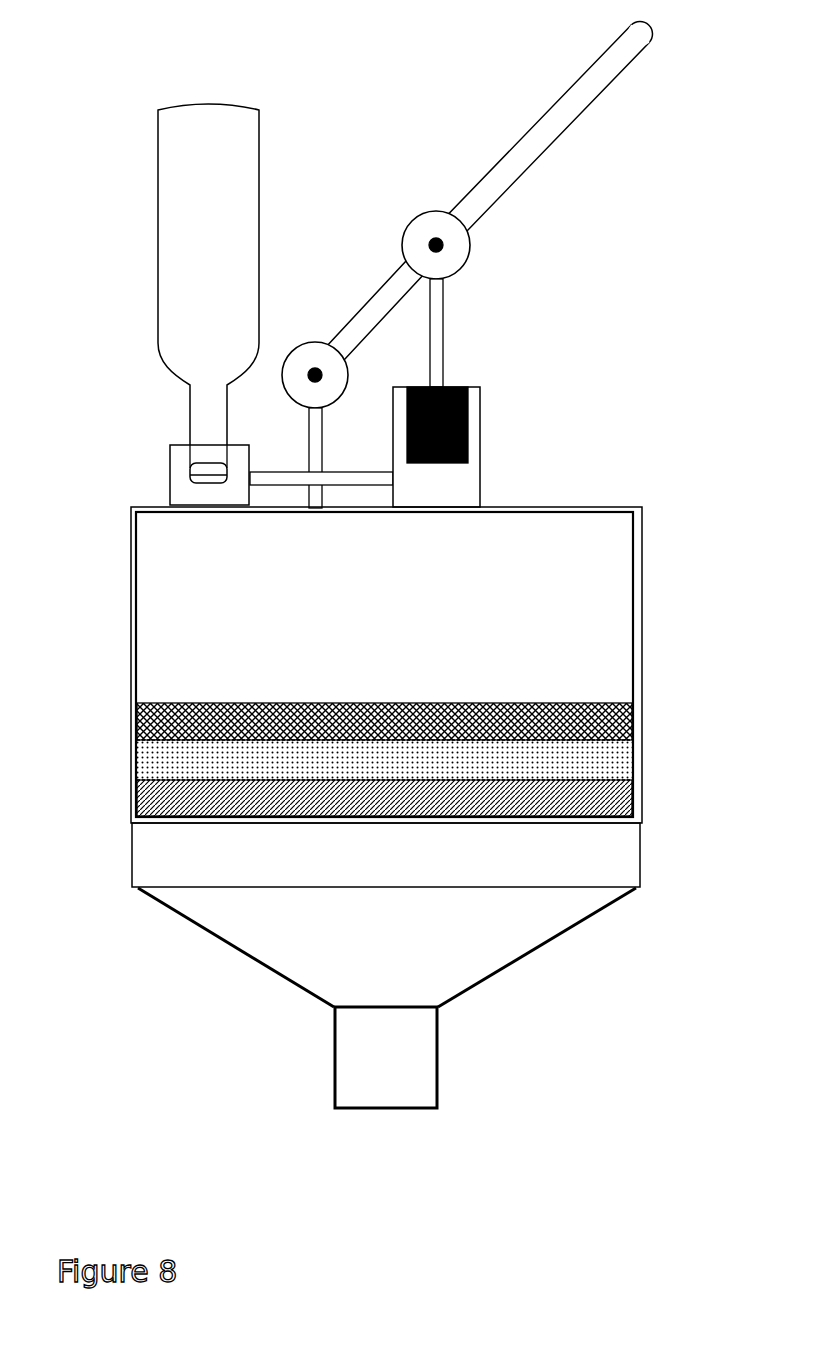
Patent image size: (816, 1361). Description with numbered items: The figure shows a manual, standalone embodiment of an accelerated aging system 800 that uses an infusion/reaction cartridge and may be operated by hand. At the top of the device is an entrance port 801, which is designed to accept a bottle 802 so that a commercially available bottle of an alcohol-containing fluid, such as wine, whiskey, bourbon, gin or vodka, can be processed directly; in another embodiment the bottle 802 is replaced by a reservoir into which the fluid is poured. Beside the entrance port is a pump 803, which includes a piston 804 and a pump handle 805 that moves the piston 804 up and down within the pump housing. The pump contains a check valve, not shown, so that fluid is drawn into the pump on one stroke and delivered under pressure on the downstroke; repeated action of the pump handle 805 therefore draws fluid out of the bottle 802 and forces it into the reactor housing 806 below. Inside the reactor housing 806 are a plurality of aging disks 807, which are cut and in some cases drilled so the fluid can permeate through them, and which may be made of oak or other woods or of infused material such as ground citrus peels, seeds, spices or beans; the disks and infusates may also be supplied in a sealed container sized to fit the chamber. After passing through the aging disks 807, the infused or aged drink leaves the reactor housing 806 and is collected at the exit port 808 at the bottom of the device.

The accelerated aging system 800 is at (346, 1185).
The entrance port 801 is at (146, 474).
The bottle 802 is at (164, 334).
The pump 803 is at (488, 430).
The piston 804 is at (484, 449).
The lever arm 805 is at (503, 217).
The reactor housing 806 is at (428, 697).
The aging disks 807 is at (488, 778).
The exit port 808 is at (457, 1027).